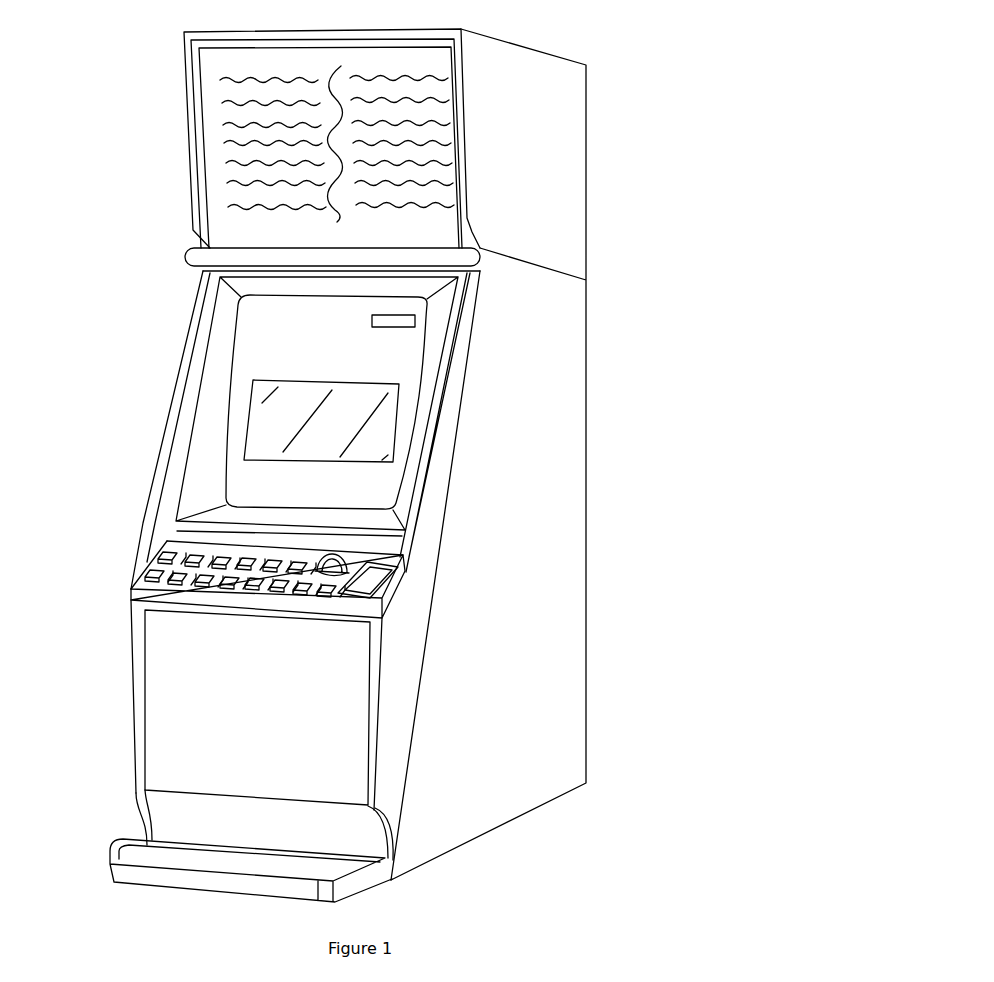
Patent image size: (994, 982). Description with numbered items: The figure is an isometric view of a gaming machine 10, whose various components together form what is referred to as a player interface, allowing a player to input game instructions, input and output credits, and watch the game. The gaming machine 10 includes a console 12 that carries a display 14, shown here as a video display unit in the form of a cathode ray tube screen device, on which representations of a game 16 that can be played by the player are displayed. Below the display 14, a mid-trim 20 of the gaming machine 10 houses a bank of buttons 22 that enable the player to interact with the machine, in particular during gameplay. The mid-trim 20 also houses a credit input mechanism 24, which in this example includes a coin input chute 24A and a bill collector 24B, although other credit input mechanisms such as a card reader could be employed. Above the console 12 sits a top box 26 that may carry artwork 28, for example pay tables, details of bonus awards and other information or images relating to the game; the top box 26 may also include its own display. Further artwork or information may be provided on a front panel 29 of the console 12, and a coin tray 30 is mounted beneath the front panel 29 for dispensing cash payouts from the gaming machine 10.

The gaming machine 10 is at (562, 40).
The console 12 is at (556, 428).
The display 14 is at (226, 472).
The game 16 is at (250, 425).
The mid-trim 20 is at (133, 590).
The bank of buttons 22 is at (194, 590).
The credit input mechanism 24 is at (366, 542).
The coin input chute 24A is at (345, 556).
The bill collector 24B is at (358, 590).
The top box 26 is at (190, 168).
The artwork 28 is at (228, 87).
The front panel 29 is at (167, 738).
The coin tray 30 is at (111, 868).